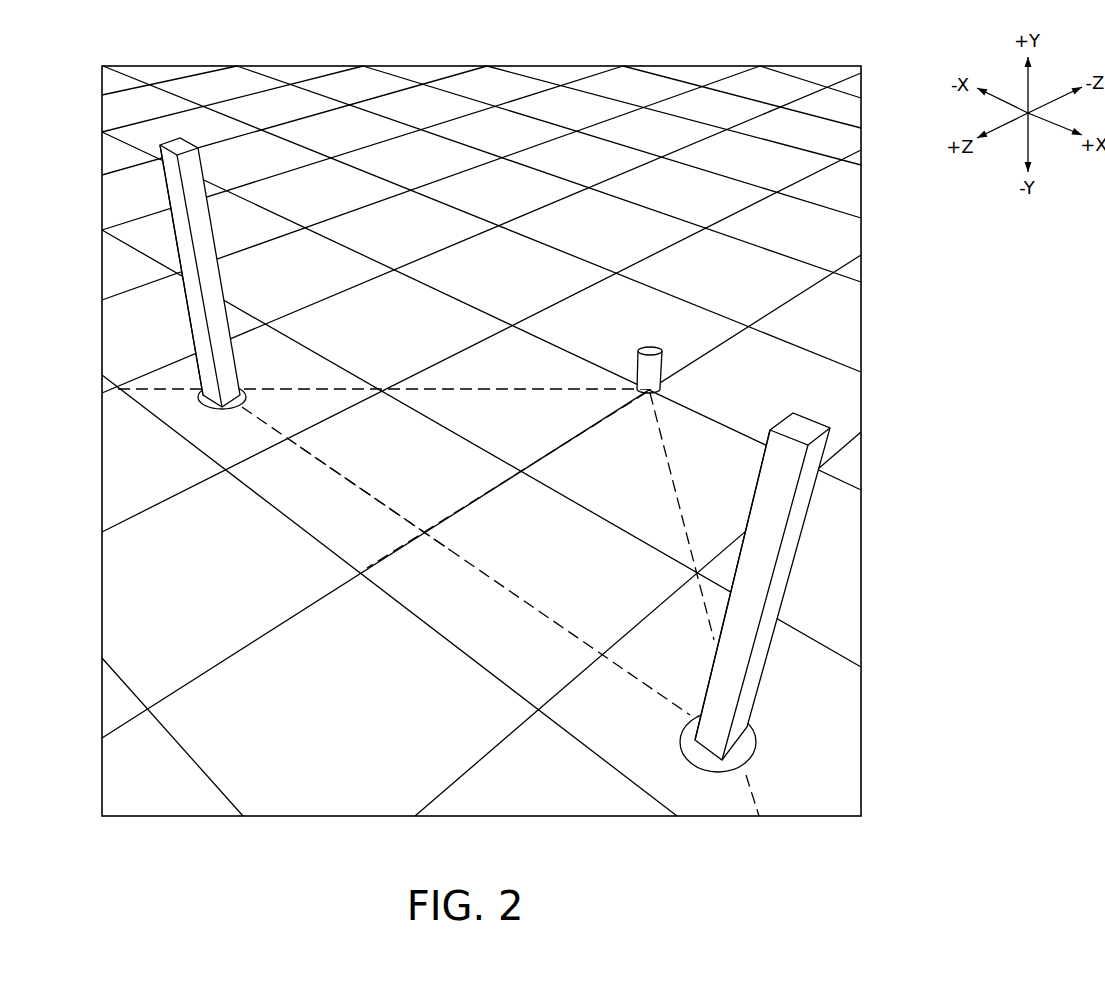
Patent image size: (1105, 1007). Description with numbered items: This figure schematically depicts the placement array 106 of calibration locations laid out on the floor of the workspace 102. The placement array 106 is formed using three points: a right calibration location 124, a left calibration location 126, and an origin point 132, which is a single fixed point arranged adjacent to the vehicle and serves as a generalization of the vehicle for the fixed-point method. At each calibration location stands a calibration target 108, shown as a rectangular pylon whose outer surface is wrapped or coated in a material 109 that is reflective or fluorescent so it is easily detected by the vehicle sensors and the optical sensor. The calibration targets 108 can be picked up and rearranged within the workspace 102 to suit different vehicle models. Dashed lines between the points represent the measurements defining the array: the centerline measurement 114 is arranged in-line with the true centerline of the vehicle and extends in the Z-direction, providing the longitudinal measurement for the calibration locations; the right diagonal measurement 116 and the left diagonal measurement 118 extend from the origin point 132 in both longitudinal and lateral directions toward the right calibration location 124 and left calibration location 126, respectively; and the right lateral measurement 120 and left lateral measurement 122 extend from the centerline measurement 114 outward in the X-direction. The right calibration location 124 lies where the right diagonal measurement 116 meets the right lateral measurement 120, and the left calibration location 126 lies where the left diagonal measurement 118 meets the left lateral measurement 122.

The workspace 102 is at (840, 290).
The placement array 106 is at (306, 466).
The calibration targets 108 is at (175, 227).
The material 109 is at (206, 322).
The centerline measurement 114 is at (494, 490).
The right diagonal measurement 116 is at (667, 464).
The left diagonal measurement 118 is at (492, 389).
The right lateral measurement 120 is at (553, 615).
The left lateral measurement 122 is at (372, 493).
The right calibration location 124 is at (757, 742).
The left calibration location 126 is at (206, 389).
The origin point 132 is at (650, 347).